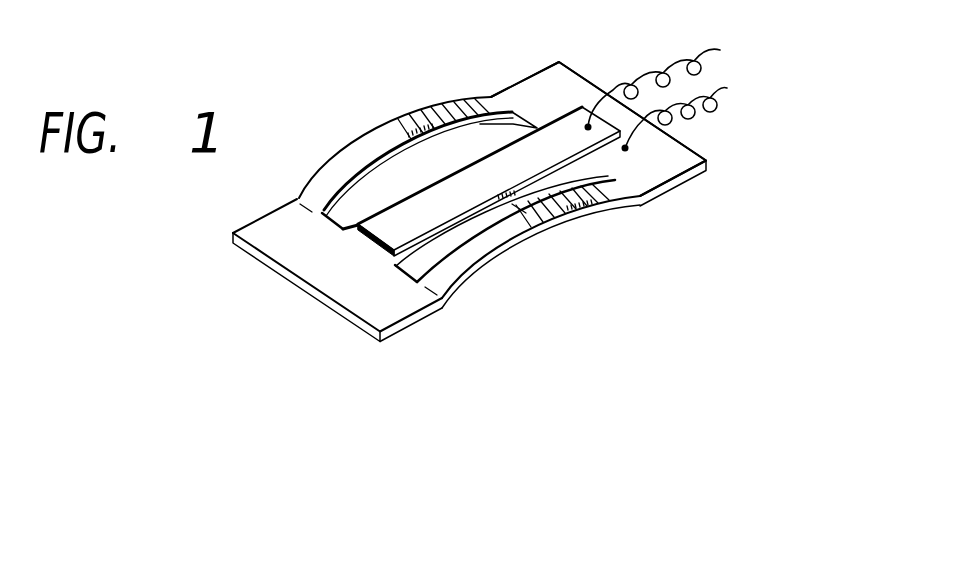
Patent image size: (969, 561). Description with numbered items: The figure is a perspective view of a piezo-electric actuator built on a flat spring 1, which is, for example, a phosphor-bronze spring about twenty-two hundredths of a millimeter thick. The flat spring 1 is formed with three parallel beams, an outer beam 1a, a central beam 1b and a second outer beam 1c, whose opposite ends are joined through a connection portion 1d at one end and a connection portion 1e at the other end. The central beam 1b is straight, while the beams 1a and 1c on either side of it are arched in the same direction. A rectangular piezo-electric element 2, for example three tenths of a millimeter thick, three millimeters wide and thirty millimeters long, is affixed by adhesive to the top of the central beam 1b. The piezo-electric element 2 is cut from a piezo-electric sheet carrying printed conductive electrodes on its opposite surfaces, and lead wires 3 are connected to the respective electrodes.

The flat spring 1 is at (420, 102).
The beam 1a is at (367, 150).
The central beam 1b is at (432, 243).
The beam 1c is at (483, 233).
The connection portion 1d is at (567, 95).
The connection portion 1e is at (350, 278).
The piezo-electric element 2 is at (515, 167).
The lead wires 3 is at (727, 88).